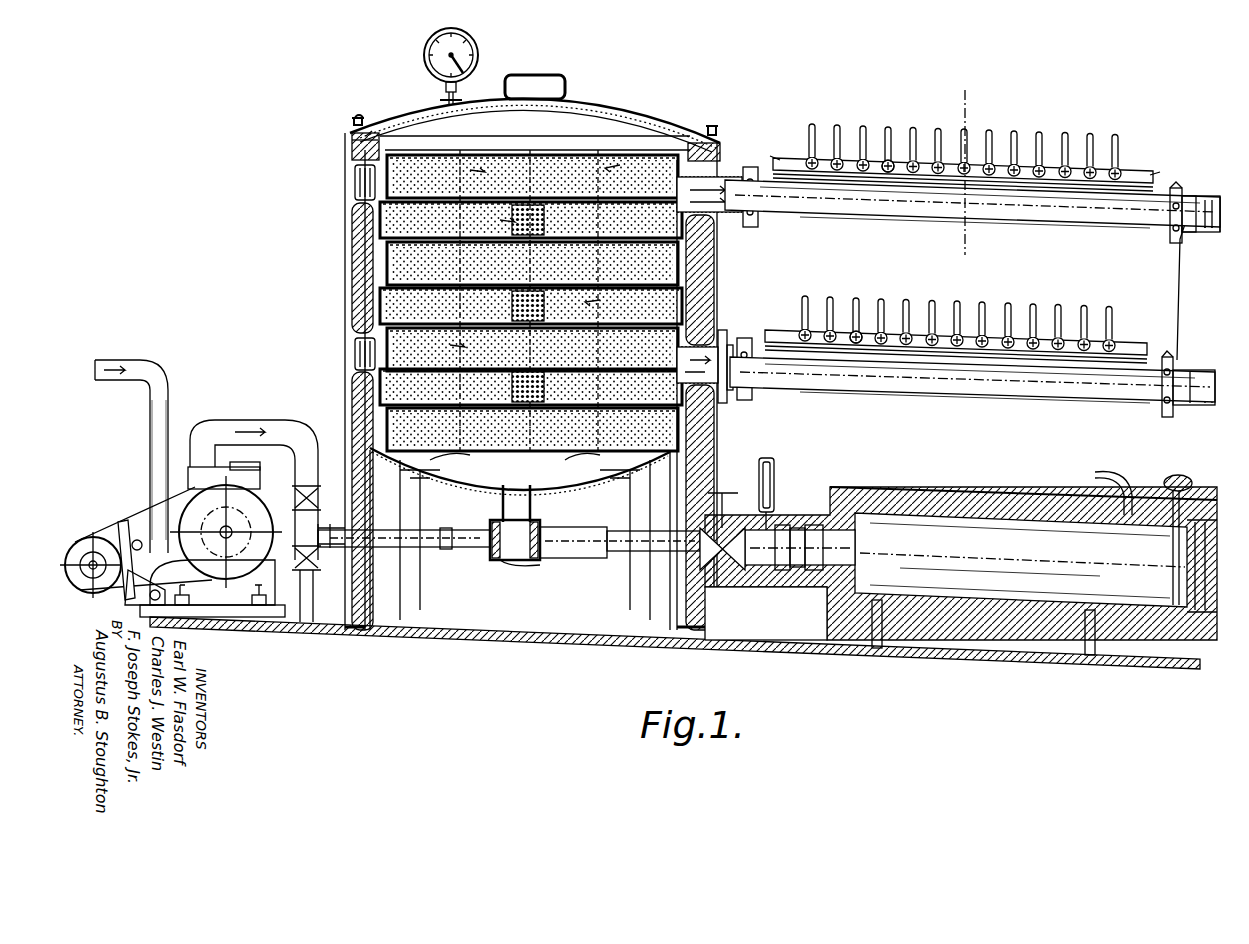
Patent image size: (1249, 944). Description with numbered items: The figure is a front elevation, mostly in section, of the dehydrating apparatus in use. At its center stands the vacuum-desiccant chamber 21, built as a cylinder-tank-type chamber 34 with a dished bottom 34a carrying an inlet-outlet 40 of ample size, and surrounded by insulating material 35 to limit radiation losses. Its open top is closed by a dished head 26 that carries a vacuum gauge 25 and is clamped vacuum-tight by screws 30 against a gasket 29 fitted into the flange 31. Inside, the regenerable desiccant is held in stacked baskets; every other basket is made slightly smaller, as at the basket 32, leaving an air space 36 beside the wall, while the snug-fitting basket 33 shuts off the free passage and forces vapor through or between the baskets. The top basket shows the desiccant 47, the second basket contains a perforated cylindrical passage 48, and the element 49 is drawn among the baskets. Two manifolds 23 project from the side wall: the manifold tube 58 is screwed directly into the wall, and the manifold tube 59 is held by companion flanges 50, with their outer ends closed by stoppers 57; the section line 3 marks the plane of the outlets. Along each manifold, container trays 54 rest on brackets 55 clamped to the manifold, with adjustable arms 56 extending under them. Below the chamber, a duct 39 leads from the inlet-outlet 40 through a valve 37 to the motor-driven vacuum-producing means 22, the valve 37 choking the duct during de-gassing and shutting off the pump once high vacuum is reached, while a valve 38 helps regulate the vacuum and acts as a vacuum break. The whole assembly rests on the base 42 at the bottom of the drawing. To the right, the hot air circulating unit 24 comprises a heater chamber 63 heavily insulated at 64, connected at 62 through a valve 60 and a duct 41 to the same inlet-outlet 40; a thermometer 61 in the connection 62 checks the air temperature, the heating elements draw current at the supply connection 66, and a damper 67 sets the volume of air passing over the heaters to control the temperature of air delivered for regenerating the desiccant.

The section line 3 is at (962, 173).
The vacuum-desiccant chamber 21 is at (345, 225).
The vacuum-producing means 22 is at (222, 470).
The manifold 23 is at (1190, 360).
The hot air circulating unit 24 is at (985, 490).
The vacuum gauge 25 is at (424, 48).
The dished head 26 is at (437, 105).
The gasket 29 is at (372, 130).
The screws 30 is at (354, 120).
The flange 31 is at (350, 141).
The smaller basket 32 is at (378, 255).
The snug-fitting basket 33 is at (378, 285).
The cylinder-tank-type chamber 34 is at (378, 295).
The dished bottom 34a is at (605, 485).
The insulating material 35 is at (378, 312).
The air space 36 is at (378, 324).
The valve 37 is at (285, 462).
The valve 38 is at (306, 625).
The duct 39 is at (447, 549).
The inlet-outlet 40 is at (496, 506).
The duct 41 is at (582, 553).
The base 42 is at (572, 645).
The desiccant 47 is at (488, 175).
The cylindrical passage 48 is at (545, 240).
The guide rods 49 is at (638, 215).
The companion flanges 50 is at (725, 345).
The container trays 54 is at (1136, 168).
The brackets 55 is at (1175, 186).
The adjustable arms 56 is at (1190, 200).
The stoppers 57 is at (1212, 230).
The manifold tube 58 is at (1050, 217).
The manifold tube 59 is at (1095, 390).
The valve 60 is at (722, 492).
The thermometer 61 is at (767, 458).
The connection 62 is at (790, 522).
The heater chamber 63 is at (876, 515).
The insulation 64 is at (930, 490).
The current supply connection 66 is at (1125, 472).
The damper 67 is at (1180, 476).